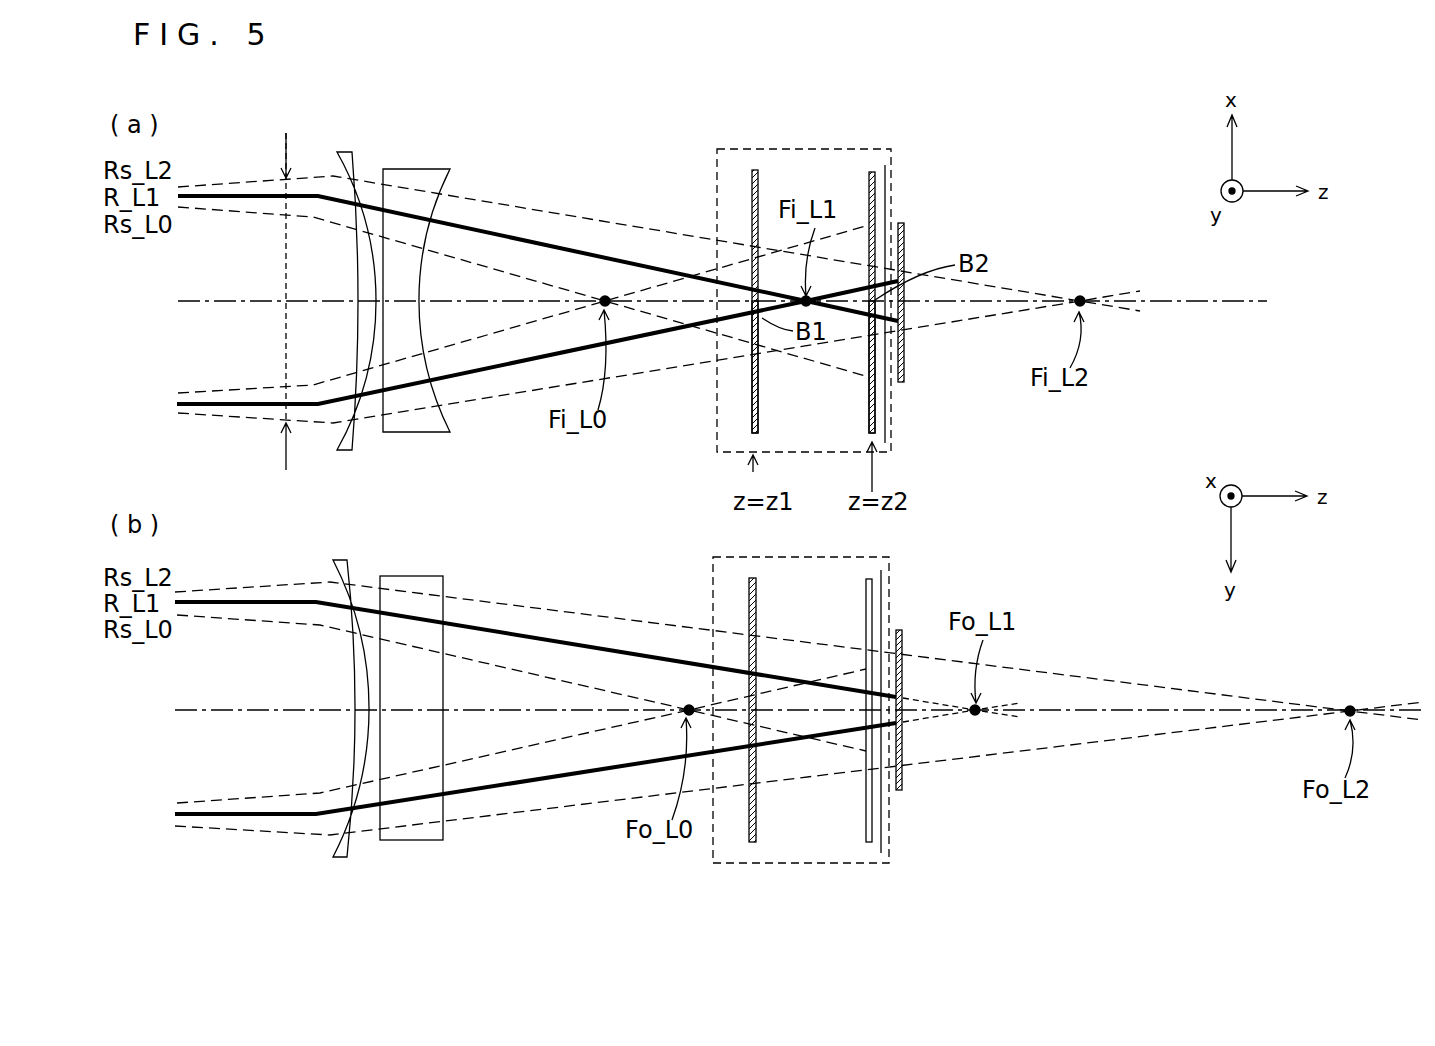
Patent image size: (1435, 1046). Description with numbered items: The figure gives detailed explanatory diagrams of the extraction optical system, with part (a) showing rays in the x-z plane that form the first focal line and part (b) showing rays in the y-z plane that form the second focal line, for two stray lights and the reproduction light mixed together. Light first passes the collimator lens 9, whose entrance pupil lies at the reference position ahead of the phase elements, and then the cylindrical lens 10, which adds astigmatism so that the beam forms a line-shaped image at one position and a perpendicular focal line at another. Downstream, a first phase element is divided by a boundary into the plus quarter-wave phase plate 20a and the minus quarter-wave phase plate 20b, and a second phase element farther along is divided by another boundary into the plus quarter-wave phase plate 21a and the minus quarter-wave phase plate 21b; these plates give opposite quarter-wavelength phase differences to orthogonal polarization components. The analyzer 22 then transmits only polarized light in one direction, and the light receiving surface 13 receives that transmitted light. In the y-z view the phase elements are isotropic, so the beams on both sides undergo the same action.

The collimator lens 9 is at (345, 150).
The cylindrical lens 10 is at (412, 168).
The light receiving surface 13 is at (904, 240).
The phase plate 20a is at (752, 415).
The phase plate 20b is at (754, 170).
The phase plate 21a is at (872, 172).
The phase plate 21b is at (869, 412).
The analyzer 22 is at (885, 170).